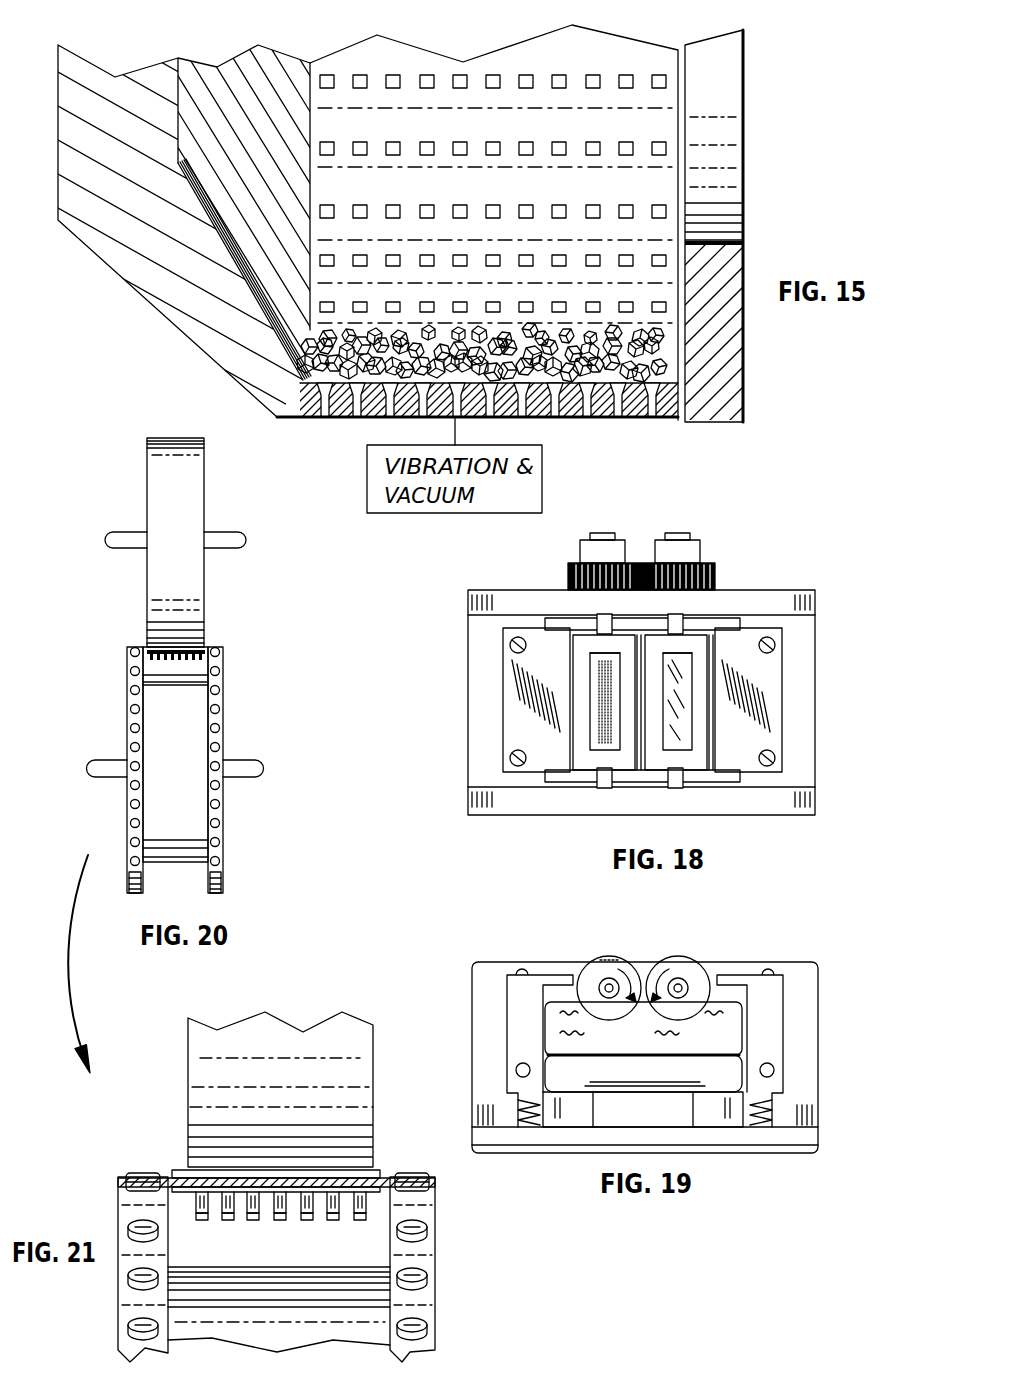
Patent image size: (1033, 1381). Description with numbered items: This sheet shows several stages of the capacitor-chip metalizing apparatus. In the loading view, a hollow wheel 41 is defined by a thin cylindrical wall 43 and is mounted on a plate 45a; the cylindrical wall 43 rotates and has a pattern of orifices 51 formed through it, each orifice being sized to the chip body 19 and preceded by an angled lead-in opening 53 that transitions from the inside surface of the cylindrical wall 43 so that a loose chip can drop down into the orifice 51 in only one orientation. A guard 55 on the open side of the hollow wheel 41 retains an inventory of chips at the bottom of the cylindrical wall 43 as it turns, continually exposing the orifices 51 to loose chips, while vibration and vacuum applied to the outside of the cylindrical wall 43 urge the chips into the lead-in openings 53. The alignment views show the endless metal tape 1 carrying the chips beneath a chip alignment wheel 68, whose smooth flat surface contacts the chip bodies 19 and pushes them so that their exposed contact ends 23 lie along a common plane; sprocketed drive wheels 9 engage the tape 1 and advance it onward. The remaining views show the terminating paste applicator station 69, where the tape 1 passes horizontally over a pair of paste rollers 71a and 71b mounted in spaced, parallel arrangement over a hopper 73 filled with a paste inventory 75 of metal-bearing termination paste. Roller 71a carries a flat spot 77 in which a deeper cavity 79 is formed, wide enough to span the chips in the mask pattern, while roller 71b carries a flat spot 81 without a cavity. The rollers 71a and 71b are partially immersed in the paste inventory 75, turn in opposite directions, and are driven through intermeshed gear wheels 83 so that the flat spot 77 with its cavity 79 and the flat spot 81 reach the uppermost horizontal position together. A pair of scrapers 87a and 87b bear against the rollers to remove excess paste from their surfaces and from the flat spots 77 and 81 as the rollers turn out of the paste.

In FIG. 15, the hollow wheel 41 is at (628, 122).
In FIG. 15, the guard 55 is at (745, 222).
In FIG. 15, the angled lead-in opening 53 is at (680, 374).
In FIG. 15, the plate 45a is at (125, 233).
In FIG. 15, the chip body 19 is at (538, 336).
In FIG. 21, the chip body 19 is at (197, 1202).
In FIG. 15, the orifices 51 is at (392, 418).
In FIG. 15, the cylindrical wall 43 is at (647, 418).
In FIG. 20, the chip alignment wheel 68 is at (160, 518).
In FIG. 21, the chip alignment wheel 68 is at (207, 1098).
In FIG. 20, the tape 1 is at (169, 748).
In FIG. 21, the tape 1 is at (304, 1239).
In FIG. 20, the drive sprocket wheels 9 is at (128, 740).
In FIG. 21, the drive sprocket wheels 9 is at (430, 1292).
In FIG. 18, the flat spot 77 is at (597, 655).
In FIG. 19, the flat spot 77 is at (617, 957).
In FIG. 18, the intermeshed gear wheels 83 is at (713, 580).
In FIG. 18, the cavity 79 is at (593, 687).
In FIG. 19, the cavity 79 is at (593, 970).
In FIG. 18, the flat spot 81 is at (683, 660).
In FIG. 19, the flat spot 81 is at (676, 958).
In FIG. 18, the terminating paste applicator station 69 is at (773, 748).
In FIG. 18, the paste roller 71a is at (526, 738).
In FIG. 19, the paste roller 71a is at (588, 958).
In FIG. 18, the paste roller 71b is at (759, 729).
In FIG. 19, the paste roller 71b is at (704, 963).
In FIG. 19, the scraper 87a is at (568, 973).
In FIG. 19, the scraper 87b is at (723, 973).
In FIG. 19, the paste inventory 75 is at (565, 1030).
In FIG. 19, the hopper 73 is at (717, 1040).
In FIG. 21, the contact ends 23 is at (263, 1221).